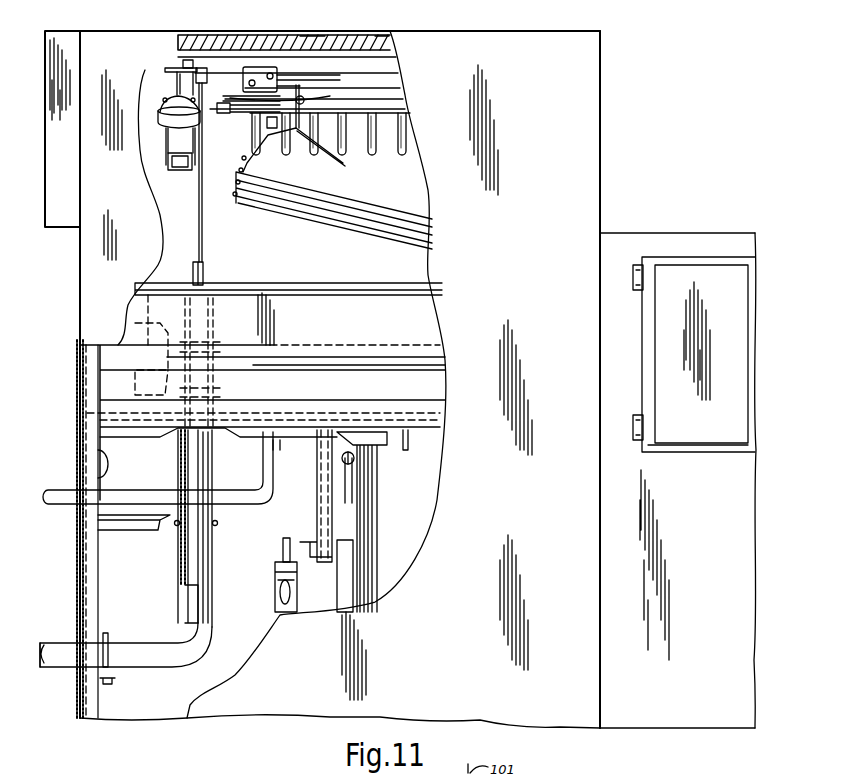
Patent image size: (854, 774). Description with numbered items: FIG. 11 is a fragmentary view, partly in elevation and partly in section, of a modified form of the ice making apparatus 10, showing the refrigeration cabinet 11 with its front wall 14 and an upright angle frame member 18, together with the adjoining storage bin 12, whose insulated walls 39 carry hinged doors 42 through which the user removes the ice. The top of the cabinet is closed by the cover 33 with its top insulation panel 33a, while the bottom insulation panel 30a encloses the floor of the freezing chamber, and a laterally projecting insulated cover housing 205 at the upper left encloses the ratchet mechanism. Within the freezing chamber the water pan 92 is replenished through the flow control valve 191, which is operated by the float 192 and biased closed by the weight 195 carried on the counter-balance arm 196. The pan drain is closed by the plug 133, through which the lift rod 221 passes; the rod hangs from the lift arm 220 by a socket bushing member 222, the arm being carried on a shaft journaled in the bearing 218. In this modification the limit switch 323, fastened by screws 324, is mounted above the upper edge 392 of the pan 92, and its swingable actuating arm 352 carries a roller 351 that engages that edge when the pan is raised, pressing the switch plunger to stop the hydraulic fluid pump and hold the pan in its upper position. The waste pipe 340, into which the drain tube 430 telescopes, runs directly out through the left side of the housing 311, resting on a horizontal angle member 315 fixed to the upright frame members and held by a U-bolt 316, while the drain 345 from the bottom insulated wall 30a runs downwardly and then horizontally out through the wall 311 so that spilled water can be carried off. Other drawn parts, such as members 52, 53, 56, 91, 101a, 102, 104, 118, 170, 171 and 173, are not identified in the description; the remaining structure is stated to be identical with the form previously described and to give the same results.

The ice making apparatus 10 is at (622, 201).
The refrigeration cabinet 11 is at (615, 133).
The storage bin 12 is at (660, 230).
The front wall 14 is at (591, 94).
The upright angle frame member 18 is at (88, 576).
The bottom panel of insulation 30a is at (437, 421).
The cover 33 is at (367, 38).
The top panel 33a is at (384, 39).
The insulated walls 39 is at (739, 508).
The doors 42 is at (737, 394).
The valve 52 is at (274, 606).
The valve bracket 53 is at (284, 535).
The comb rack 56 is at (392, 114).
The vertical column 91 is at (360, 522).
The water pan 92 is at (308, 290).
The guide 101a is at (316, 100).
The top plate 102 is at (382, 87).
The beam 104 is at (434, 369).
The slot and pin 118 is at (355, 488).
The valve closure plunger member 133 is at (193, 274).
The rail 170 is at (298, 207).
The rail end 171 is at (246, 206).
The pipe 173 is at (305, 74).
The flow control valve 191 is at (180, 94).
The float 192 is at (166, 112).
The weight 195 is at (170, 170).
The counter-balance arm 196 is at (166, 152).
The insulated cover housing 205 is at (66, 218).
The bearing 218 is at (183, 64).
The lift arm 220 is at (207, 68).
The lift rod 221 is at (199, 202).
The socket bushing member 222 is at (200, 66).
The housing wall 311 is at (71, 703).
The horizontal angle member 315 is at (111, 680).
The U-bolt 316 is at (108, 638).
The switch 323 is at (318, 38).
The screws 324 is at (270, 64).
The waste pipe 340 is at (180, 568).
The drain 345 is at (160, 490).
The contact or roller 351 is at (242, 112).
The swingable actuating arm 352 is at (245, 128).
The upper edge 392 is at (248, 288).
The drain tube 430 is at (209, 548).